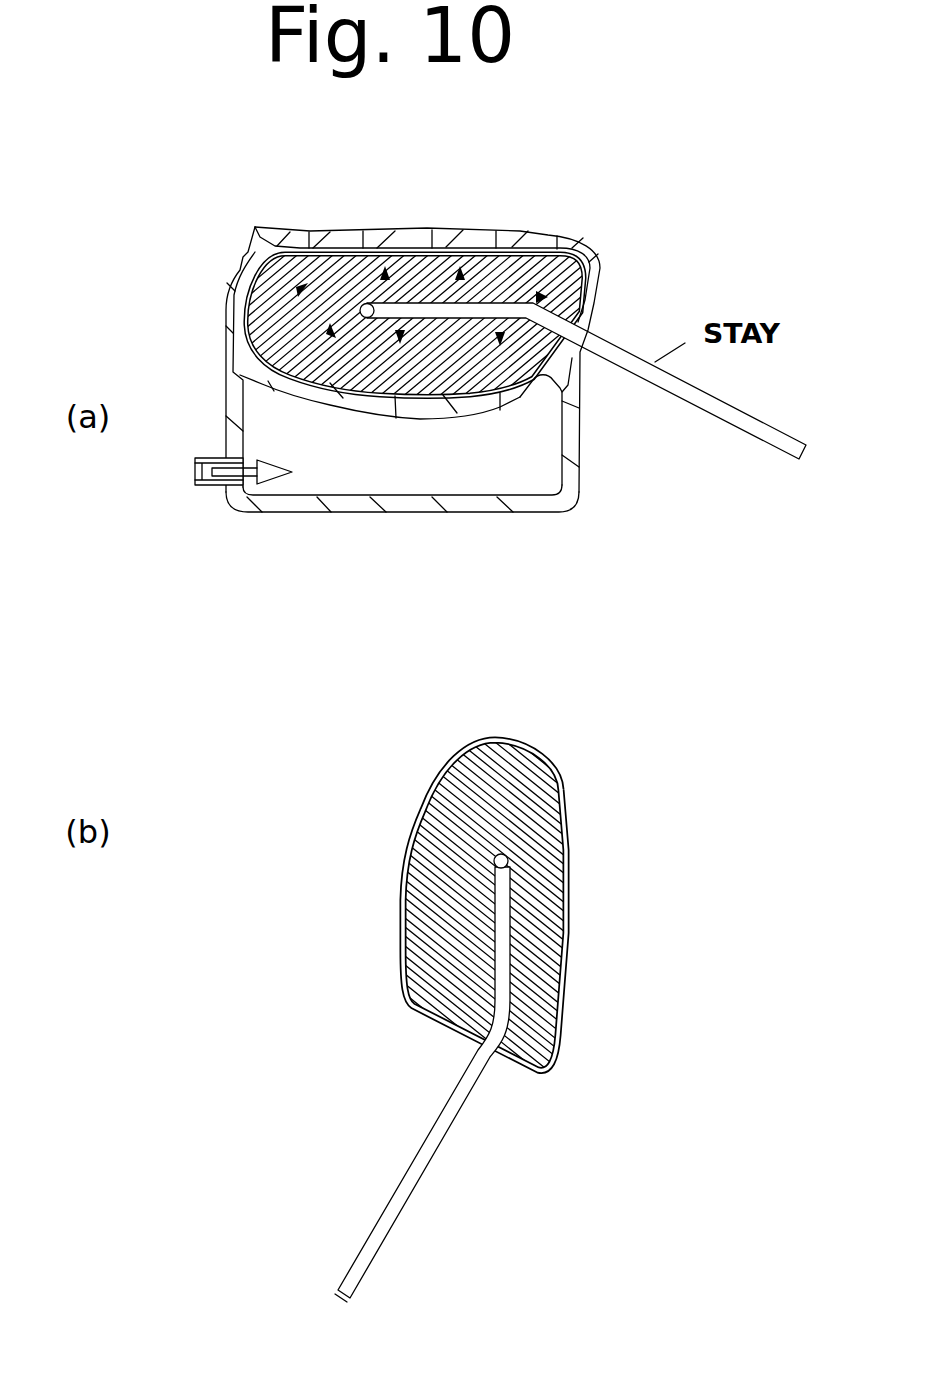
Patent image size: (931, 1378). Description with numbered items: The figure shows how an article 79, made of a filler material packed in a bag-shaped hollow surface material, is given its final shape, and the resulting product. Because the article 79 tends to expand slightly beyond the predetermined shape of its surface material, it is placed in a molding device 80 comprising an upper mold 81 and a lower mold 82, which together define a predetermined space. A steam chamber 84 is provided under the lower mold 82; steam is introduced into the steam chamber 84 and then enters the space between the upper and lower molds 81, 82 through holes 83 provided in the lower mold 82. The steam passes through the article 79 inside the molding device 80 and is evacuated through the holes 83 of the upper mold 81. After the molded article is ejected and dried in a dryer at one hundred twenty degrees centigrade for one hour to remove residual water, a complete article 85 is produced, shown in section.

The article 79 is at (343, 266).
The molding device 80 is at (527, 252).
The upper mold 81 is at (597, 266).
The lower mold 82 is at (237, 363).
The holes 83 is at (438, 232).
The steam chamber 84 is at (443, 513).
The complete article 85 is at (537, 800).